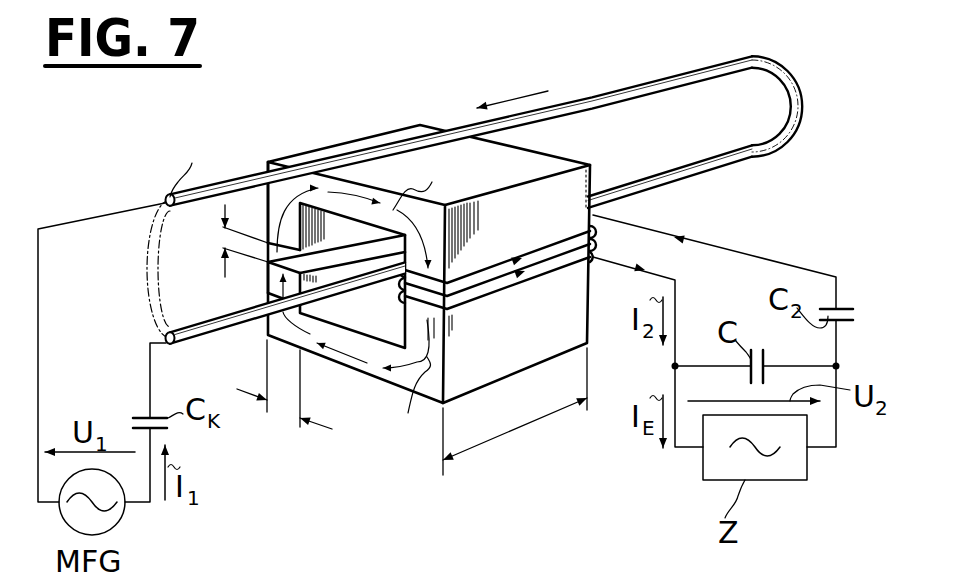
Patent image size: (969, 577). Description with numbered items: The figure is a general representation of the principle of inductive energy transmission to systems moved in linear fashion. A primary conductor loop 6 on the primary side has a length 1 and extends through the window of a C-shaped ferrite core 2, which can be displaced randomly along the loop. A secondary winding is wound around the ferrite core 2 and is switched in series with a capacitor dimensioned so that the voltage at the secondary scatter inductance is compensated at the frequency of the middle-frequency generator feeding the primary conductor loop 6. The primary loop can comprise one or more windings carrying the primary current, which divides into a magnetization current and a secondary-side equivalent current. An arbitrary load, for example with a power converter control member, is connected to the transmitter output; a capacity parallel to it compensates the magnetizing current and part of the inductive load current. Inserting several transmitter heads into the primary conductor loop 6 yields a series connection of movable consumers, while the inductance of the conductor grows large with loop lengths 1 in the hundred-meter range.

The length of the primary-side conductor loop 1 is at (793, 0).
The C-shaped ferrite core 2 is at (500, 370).
The primary conductor loop 6 is at (737, 153).